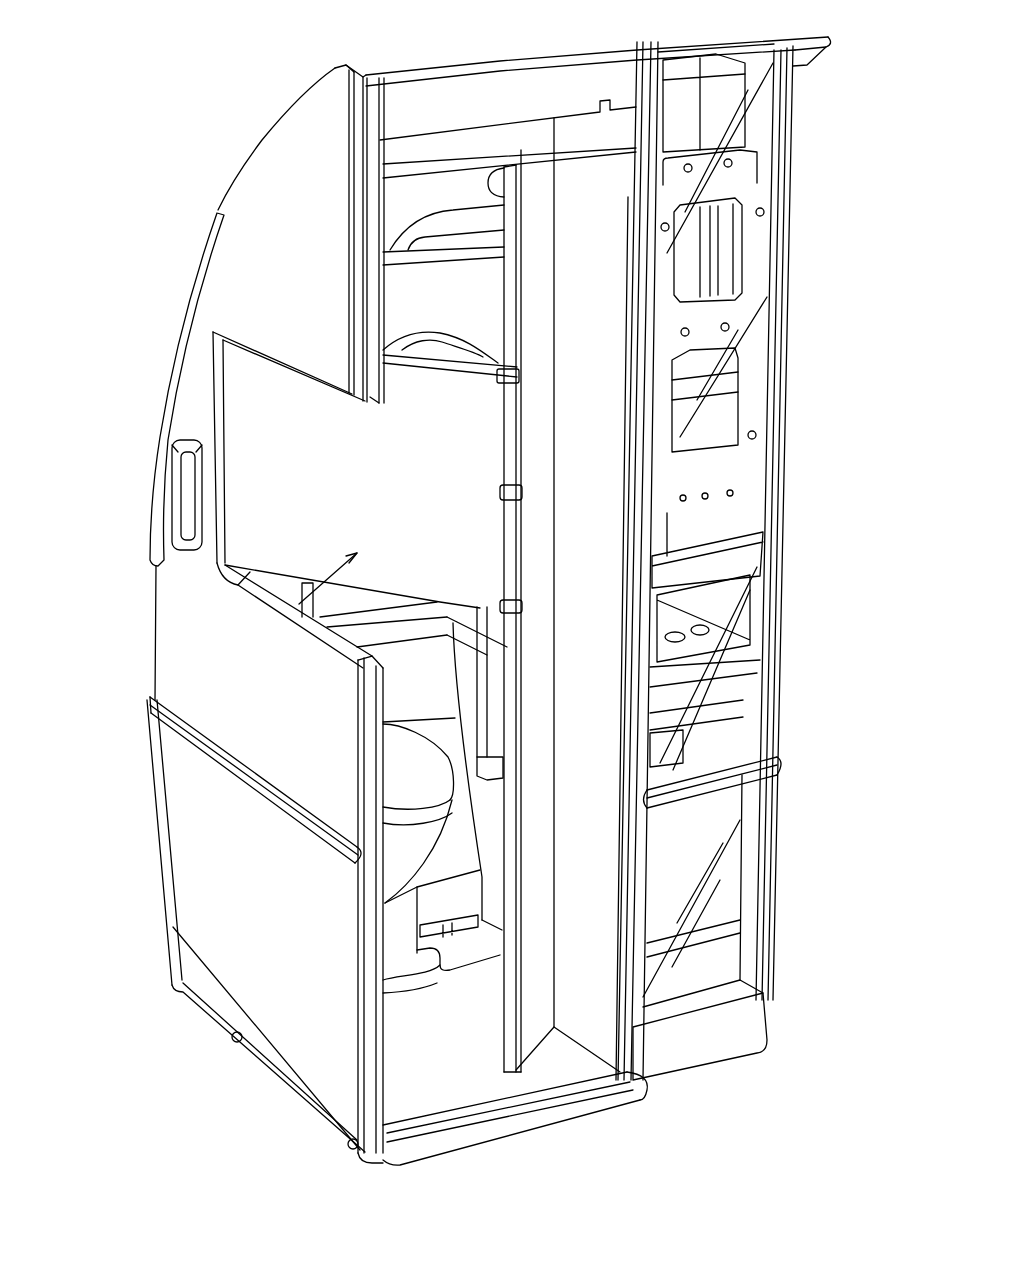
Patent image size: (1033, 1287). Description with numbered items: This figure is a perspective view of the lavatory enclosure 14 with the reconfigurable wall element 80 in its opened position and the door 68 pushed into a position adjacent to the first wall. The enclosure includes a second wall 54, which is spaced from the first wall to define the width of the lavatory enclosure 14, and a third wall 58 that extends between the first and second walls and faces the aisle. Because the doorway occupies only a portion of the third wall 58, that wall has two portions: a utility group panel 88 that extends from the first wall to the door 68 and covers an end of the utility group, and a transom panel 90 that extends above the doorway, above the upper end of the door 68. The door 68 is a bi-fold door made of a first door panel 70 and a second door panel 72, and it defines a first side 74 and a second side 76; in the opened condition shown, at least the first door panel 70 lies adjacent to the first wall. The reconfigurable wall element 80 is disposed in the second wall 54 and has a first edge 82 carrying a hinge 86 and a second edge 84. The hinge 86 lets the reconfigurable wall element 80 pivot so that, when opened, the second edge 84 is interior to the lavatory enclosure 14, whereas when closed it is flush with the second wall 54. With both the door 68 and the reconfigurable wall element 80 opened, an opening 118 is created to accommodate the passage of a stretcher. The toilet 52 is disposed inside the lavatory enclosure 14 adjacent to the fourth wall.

The lavatory enclosure 14 is at (160, 103).
The transom panel 90 is at (483, 84).
The door 68 is at (630, 603).
The first door panel 70 is at (613, 199).
The second door panel 72 is at (500, 1048).
The third wall 58 is at (773, 259).
The utility group panel 88 is at (757, 320).
The first edge 82 is at (206, 315).
The hinge 86 is at (213, 393).
The reconfigurable wall element 80 is at (237, 417).
The second wall 54 is at (192, 670).
The second side 76 is at (560, 611).
The second edge 84 is at (520, 489).
The first side 74 is at (625, 589).
The opening 118 is at (299, 604).
The toilet 52 is at (397, 777).